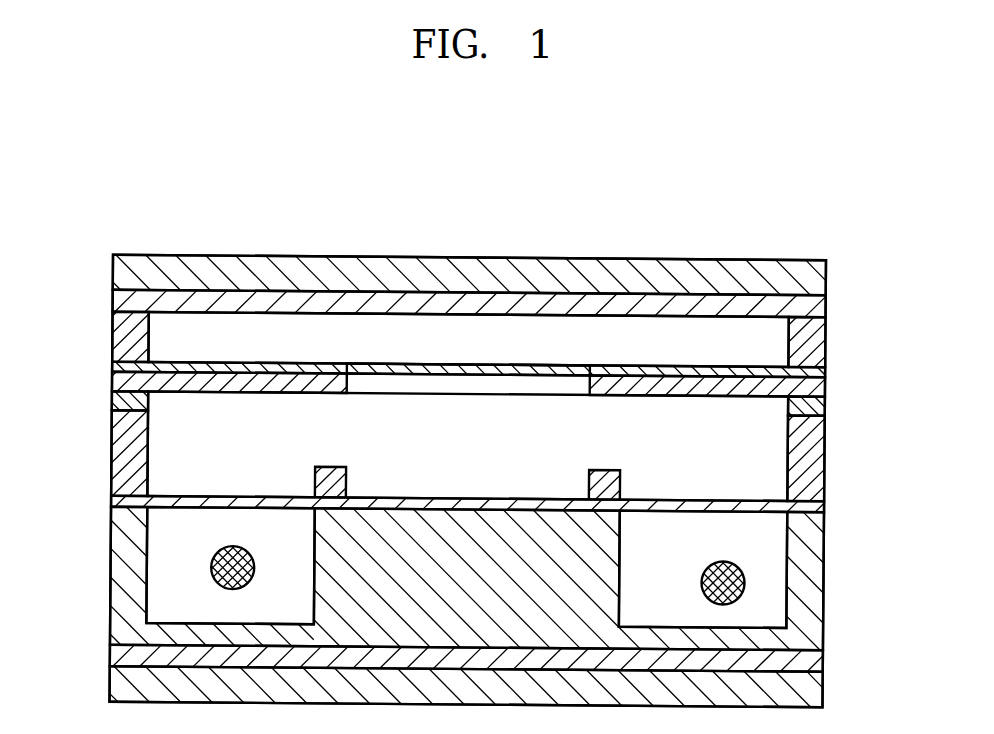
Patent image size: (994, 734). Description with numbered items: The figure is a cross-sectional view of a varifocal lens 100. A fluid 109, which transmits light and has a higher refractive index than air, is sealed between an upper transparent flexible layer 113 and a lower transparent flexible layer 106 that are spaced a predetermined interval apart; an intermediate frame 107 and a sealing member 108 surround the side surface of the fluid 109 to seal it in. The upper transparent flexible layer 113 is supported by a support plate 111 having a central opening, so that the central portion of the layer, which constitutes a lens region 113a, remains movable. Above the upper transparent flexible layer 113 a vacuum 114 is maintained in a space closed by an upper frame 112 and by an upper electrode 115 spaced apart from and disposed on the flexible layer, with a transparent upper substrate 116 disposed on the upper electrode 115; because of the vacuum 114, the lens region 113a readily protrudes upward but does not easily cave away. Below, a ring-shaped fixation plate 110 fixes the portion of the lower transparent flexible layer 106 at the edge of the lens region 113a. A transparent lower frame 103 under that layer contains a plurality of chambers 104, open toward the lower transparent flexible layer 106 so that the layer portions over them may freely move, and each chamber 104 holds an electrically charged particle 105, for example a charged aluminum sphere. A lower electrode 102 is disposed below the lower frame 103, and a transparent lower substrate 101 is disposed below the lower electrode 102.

The varifocal lens 100 is at (91, 250).
The transparent lower substrate 101 is at (817, 687).
The lower electrode 102 is at (817, 657).
The lower frame 103 is at (817, 615).
The chamber 104 is at (780, 542).
The charged particle 105 is at (745, 581).
The lower transparent flexible layer 106 is at (817, 502).
The intermediate frame 107 is at (817, 465).
The sealing member 108 is at (817, 404).
The fluid 109 is at (165, 447).
The fixation plate 110 is at (320, 482).
The support plate 111 is at (817, 380).
The upper frame 112 is at (817, 342).
The upper transparent flexible layer 113 is at (232, 364).
The lens region 113a is at (441, 364).
The vacuum 114 is at (582, 334).
The upper electrode 115 is at (817, 306).
The transparent upper substrate 116 is at (825, 275).